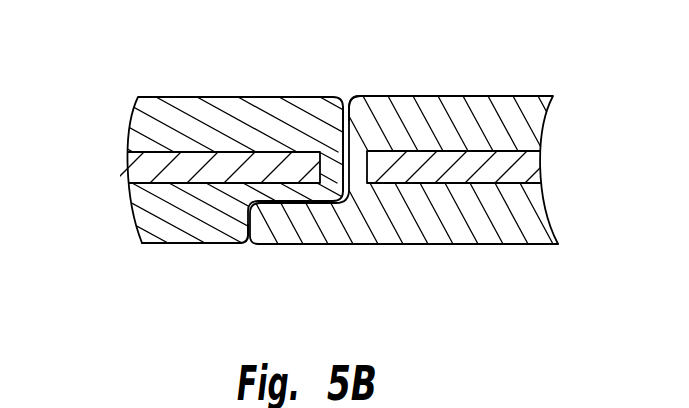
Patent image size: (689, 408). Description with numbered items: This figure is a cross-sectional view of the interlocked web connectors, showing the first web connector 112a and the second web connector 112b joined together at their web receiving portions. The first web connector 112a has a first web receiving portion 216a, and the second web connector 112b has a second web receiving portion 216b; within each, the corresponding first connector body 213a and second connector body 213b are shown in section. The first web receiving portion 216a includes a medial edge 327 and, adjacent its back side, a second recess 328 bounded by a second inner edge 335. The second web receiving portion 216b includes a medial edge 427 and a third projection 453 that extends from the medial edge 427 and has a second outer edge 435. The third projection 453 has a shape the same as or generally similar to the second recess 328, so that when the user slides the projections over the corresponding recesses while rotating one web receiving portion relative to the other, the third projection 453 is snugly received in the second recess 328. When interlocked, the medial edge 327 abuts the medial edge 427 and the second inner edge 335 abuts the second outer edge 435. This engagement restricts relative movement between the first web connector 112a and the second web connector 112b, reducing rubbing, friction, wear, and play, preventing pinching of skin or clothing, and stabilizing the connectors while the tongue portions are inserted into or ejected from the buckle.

The first web connector 112a is at (134, 112).
The second web connector 112b is at (540, 99).
The first connector body 213a is at (130, 167).
The second connector body 213b is at (530, 175).
The first web receiving portion 216a is at (178, 236).
The second web receiving portion 216b is at (530, 234).
The medial edge 327 is at (383, 96).
The second recess 328 is at (355, 246).
The second inner edge 335 is at (283, 248).
The medial edge 427 is at (318, 136).
The second outer edge 435 is at (246, 245).
The third projection 453 is at (338, 247).